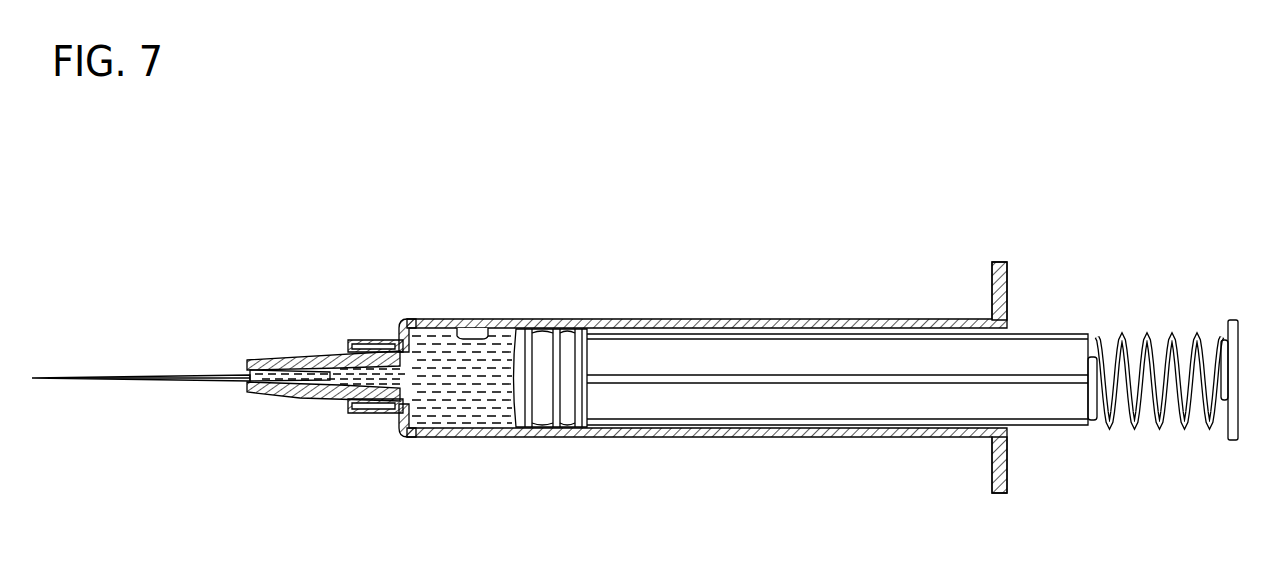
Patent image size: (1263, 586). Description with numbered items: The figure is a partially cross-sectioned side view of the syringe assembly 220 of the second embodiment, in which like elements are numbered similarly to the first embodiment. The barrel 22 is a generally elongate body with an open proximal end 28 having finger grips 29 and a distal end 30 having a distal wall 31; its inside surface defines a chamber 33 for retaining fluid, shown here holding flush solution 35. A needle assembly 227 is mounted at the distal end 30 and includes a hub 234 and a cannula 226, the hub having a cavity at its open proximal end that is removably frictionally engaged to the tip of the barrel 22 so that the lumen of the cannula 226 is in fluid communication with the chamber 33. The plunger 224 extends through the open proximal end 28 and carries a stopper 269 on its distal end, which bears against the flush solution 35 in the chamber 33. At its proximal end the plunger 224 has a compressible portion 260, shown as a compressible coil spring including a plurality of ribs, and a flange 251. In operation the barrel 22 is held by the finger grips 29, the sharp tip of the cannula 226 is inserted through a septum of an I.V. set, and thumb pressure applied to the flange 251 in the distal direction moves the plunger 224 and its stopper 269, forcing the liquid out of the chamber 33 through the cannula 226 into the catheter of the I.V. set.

The barrel 22 is at (703, 318).
The open proximal end 28 is at (970, 437).
The finger grips 29 is at (997, 261).
The distal end 30 is at (410, 438).
The distal wall 31 is at (397, 332).
The chamber 33 is at (455, 329).
The flush solution 35 is at (475, 410).
The syringe assembly 220 is at (757, 452).
The plunger 224 is at (1040, 345).
The cannula 226 is at (125, 381).
The needle assembly 227 is at (283, 343).
The hub 234 is at (287, 393).
The flange 251 is at (1233, 320).
The compressible portion 260 is at (1168, 421).
The stopper 269 is at (553, 405).